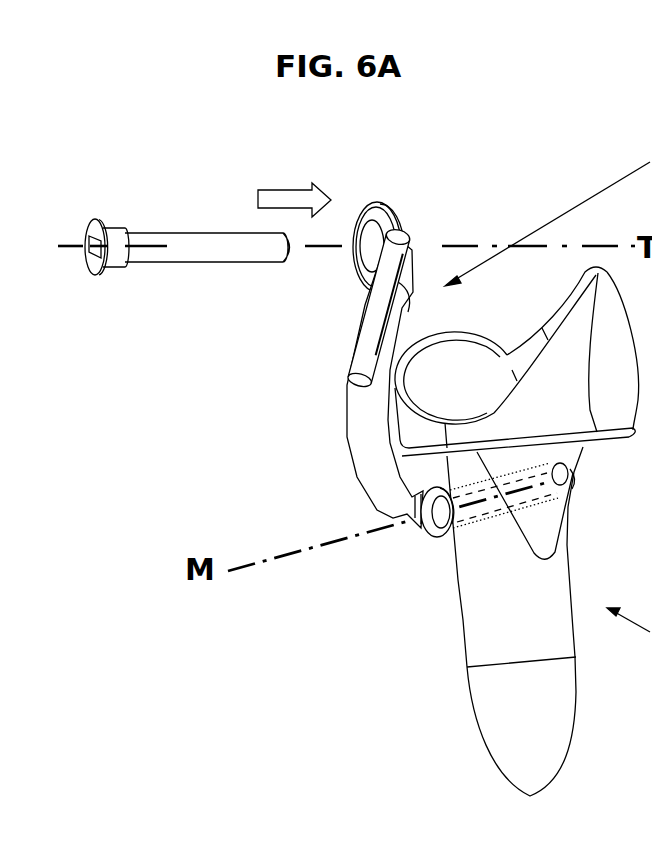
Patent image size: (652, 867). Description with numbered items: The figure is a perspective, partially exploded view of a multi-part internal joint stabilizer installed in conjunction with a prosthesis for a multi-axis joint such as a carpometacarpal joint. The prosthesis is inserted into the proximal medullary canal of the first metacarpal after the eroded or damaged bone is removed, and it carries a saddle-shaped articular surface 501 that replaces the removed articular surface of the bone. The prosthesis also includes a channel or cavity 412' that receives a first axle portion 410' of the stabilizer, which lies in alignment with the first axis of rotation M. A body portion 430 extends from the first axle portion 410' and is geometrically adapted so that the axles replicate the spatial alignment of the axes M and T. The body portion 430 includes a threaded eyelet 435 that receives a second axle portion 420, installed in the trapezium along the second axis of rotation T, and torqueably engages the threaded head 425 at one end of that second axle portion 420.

The second axle portion 420 is at (190, 258).
The threaded head 425 is at (112, 223).
The threaded eyelet 435 is at (383, 206).
The body portion 430 is at (368, 428).
The saddle-shaped articular surface 501 is at (468, 366).
The first axle portion 410' is at (394, 570).
The channel or cavity 412' is at (471, 573).